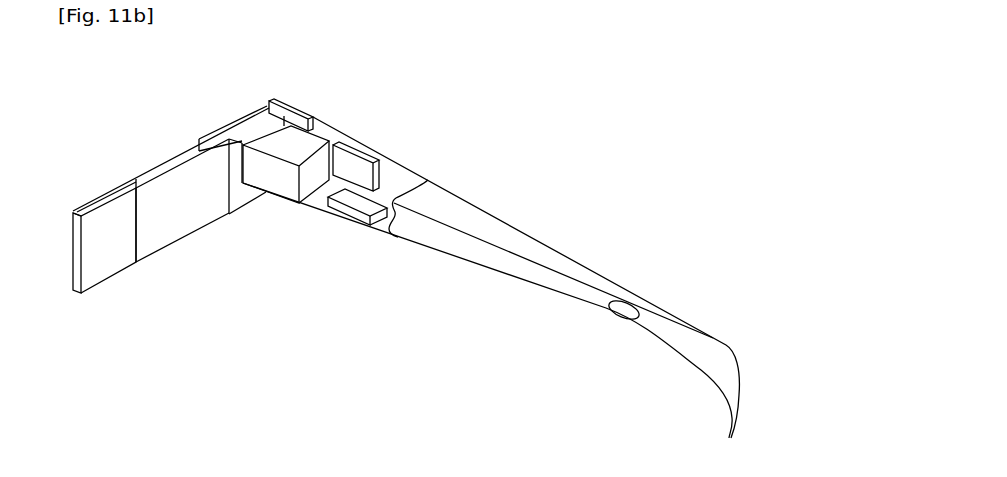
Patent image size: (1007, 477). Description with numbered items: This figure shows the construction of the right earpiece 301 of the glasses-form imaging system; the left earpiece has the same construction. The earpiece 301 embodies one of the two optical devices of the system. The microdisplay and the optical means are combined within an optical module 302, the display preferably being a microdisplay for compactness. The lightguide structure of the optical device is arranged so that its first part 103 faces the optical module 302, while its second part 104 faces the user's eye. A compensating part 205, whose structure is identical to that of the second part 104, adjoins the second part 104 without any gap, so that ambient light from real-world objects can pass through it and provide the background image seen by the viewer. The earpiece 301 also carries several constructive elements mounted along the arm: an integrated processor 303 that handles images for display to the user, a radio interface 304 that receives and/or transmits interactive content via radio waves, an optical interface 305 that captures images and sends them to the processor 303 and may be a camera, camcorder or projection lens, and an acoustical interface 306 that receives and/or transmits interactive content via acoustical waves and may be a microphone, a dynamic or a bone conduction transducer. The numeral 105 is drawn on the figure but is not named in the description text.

The first part 103 is at (242, 195).
The second part 104 is at (120, 248).
The slide rail 105 is at (182, 228).
The compensating part 205 is at (90, 208).
The earpiece 301 is at (427, 233).
The optical module 302 is at (297, 150).
The integrated processor 303 is at (335, 208).
The radio interface 304 is at (355, 167).
The optical interface 305 is at (288, 108).
The acoustical interface 306 is at (623, 307).